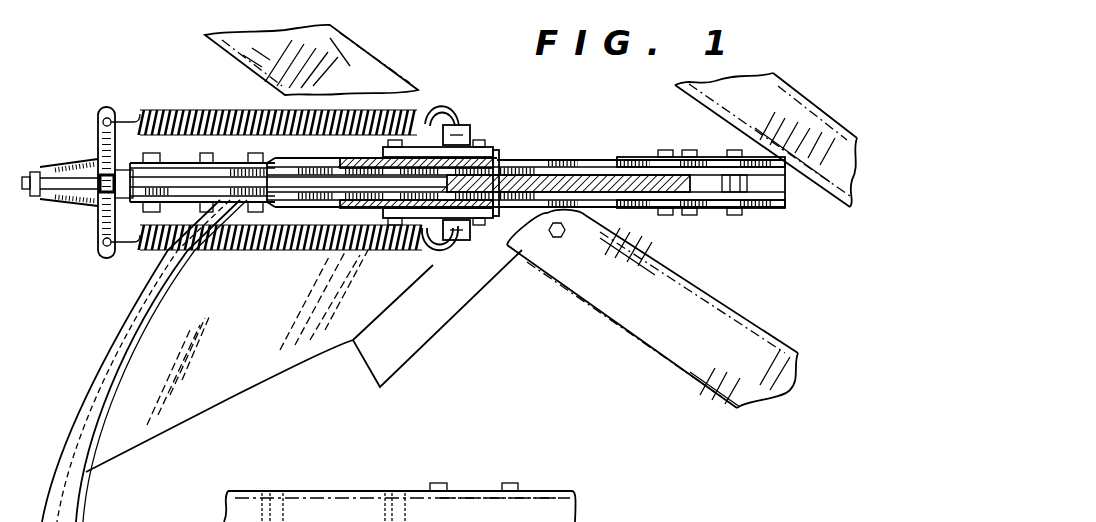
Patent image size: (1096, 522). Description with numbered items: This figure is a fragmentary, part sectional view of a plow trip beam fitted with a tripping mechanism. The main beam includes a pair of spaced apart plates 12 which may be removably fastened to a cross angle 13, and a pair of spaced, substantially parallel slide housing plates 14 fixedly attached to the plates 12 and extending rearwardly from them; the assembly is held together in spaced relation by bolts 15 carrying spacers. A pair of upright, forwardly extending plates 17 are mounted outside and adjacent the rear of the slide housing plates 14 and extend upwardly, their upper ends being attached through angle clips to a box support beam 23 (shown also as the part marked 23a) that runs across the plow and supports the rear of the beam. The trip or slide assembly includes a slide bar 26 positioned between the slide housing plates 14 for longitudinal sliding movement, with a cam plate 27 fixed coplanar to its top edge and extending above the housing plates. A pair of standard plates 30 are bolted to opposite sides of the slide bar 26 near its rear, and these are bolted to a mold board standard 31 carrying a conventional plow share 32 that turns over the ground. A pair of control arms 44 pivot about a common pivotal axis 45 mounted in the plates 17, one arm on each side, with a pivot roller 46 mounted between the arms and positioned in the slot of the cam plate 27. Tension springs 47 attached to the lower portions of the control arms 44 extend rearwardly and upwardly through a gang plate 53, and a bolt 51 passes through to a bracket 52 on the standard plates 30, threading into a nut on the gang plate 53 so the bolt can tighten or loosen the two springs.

The spaced apart plates 12 is at (650, 158).
The cross angle 13 is at (783, 97).
The slide housing plates 14 is at (612, 172).
The bolts 15 is at (667, 150).
The upright forwardly extending plates 17 is at (420, 110).
The box support beam 23 is at (653, 327).
The plate 23a is at (500, 510).
The slide bar 26 is at (233, 252).
The cam plate 27 is at (557, 175).
The standard plates 30 is at (183, 164).
The mold board standard 31 is at (192, 186).
The plow share 32 is at (283, 350).
The control arms 44 is at (470, 132).
The common pivotal axis 45 is at (437, 255).
The pivot roller 46 is at (503, 163).
The tension springs 47 is at (247, 110).
The bolt 51 is at (85, 168).
The bracket 52 is at (127, 108).
The gang plate 53 is at (100, 192).